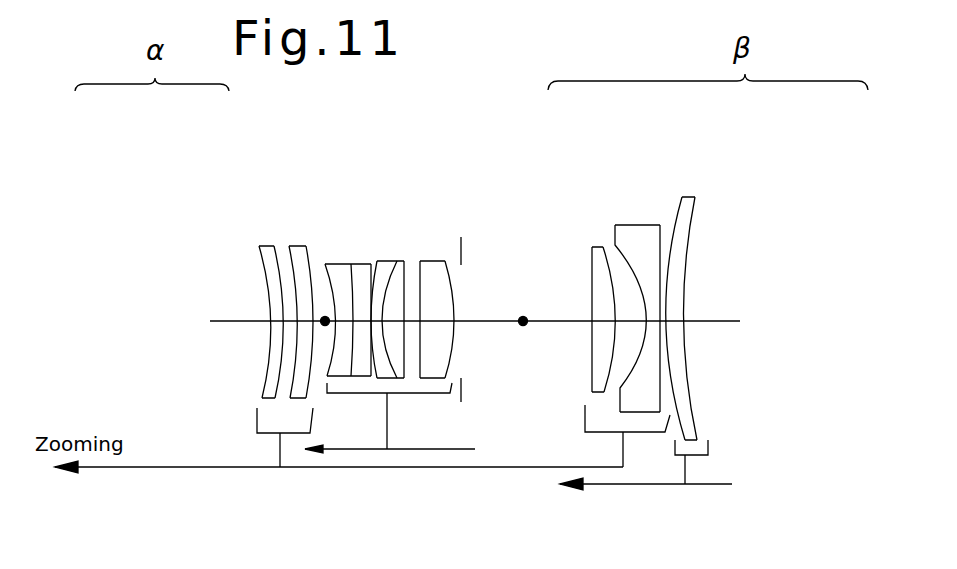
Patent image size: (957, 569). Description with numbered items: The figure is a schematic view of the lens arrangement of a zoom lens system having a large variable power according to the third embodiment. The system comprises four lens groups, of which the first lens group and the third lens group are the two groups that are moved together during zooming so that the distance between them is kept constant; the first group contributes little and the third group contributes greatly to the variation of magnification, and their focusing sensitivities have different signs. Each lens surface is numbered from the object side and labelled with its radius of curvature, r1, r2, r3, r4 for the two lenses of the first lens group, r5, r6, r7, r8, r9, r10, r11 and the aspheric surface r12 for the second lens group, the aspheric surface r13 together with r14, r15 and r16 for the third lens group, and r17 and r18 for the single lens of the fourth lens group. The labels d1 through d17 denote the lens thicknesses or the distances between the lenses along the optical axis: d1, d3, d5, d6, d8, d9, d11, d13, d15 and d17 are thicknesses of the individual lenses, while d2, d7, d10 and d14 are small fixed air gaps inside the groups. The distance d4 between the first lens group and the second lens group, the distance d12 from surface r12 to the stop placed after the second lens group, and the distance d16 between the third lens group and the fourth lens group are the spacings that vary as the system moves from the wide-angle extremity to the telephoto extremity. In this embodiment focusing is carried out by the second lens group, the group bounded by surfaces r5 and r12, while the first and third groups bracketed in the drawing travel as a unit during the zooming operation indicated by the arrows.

The radius of curvature of the first lens surface r1 is at (259, 246).
The radius of curvature of the second lens surface r2 is at (274, 246).
The radius of curvature of the third lens surface r3 is at (289, 246).
The radius of curvature of the fourth lens surface r4 is at (306, 246).
The radius of curvature of the fifth lens surface r5 is at (325, 264).
The radius of curvature of the sixth lens surface r6 is at (351, 264).
The radius of curvature of the seventh lens surface r7 is at (371, 264).
The radius of curvature of the eighth lens surface r8 is at (377, 261).
The radius of curvature of the ninth lens surface r9 is at (397, 261).
The radius of curvature of the tenth lens surface r10 is at (404, 261).
The radius of curvature of the eleventh lens surface r11 is at (420, 261).
The radius of curvature of the twelfth lens surface r12 is at (445, 261).
The radius of curvature of the thirteenth lens surface r13 is at (592, 247).
The radius of curvature of the fourteenth lens surface r14 is at (603, 247).
The radius of curvature of the fifteenth lens surface r15 is at (615, 225).
The radius of curvature of the sixteenth lens surface r16 is at (660, 225).
The radius of curvature of the seventeenth lens surface r17 is at (682, 197).
The radius of curvature of the eighteenth lens surface r18 is at (695, 197).
The lens thickness d1 is at (277, 321).
The distance d2 is at (290, 321).
The lens thickness d3 is at (305, 321).
The distance d4 is at (319, 321).
The lens thickness d5 is at (344, 321).
The lens thickness d6 is at (362, 321).
The distance d7 is at (371, 321).
The lens thickness d8 is at (376, 321).
The lens thickness d9 is at (393, 321).
The distance d10 is at (412, 321).
The lens thickness d11 is at (437, 321).
The distance d12 is at (523, 321).
The lens thickness d13 is at (603, 321).
The distance d14 is at (630, 321).
The lens thickness d15 is at (660, 321).
The distance d16 is at (663, 321).
The lens thickness d17 is at (683, 321).